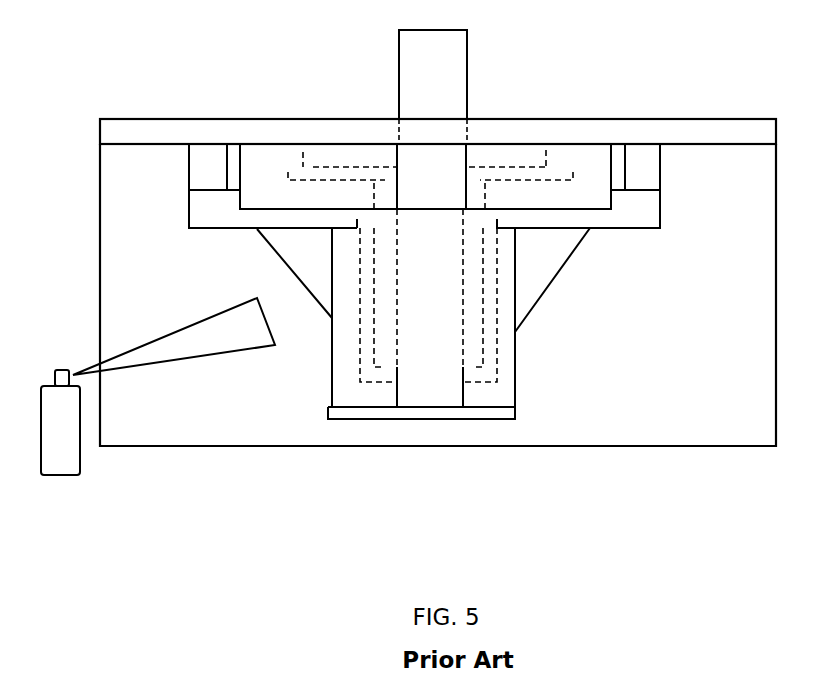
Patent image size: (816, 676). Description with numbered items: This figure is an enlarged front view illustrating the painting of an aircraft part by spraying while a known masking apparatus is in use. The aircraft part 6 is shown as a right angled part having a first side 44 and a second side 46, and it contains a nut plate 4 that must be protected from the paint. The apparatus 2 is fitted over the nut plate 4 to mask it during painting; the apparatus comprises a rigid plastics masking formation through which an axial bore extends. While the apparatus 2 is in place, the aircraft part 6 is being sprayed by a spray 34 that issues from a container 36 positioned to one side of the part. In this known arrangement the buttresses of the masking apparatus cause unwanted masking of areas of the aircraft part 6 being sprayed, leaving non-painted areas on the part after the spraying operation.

The apparatus 2 is at (526, 353).
The nut plate 4 is at (242, 200).
The aircraft part 6 is at (709, 458).
The spray 34 is at (213, 337).
The container 36 is at (89, 472).
The first side 44 is at (679, 160).
The second side 46 is at (717, 127).